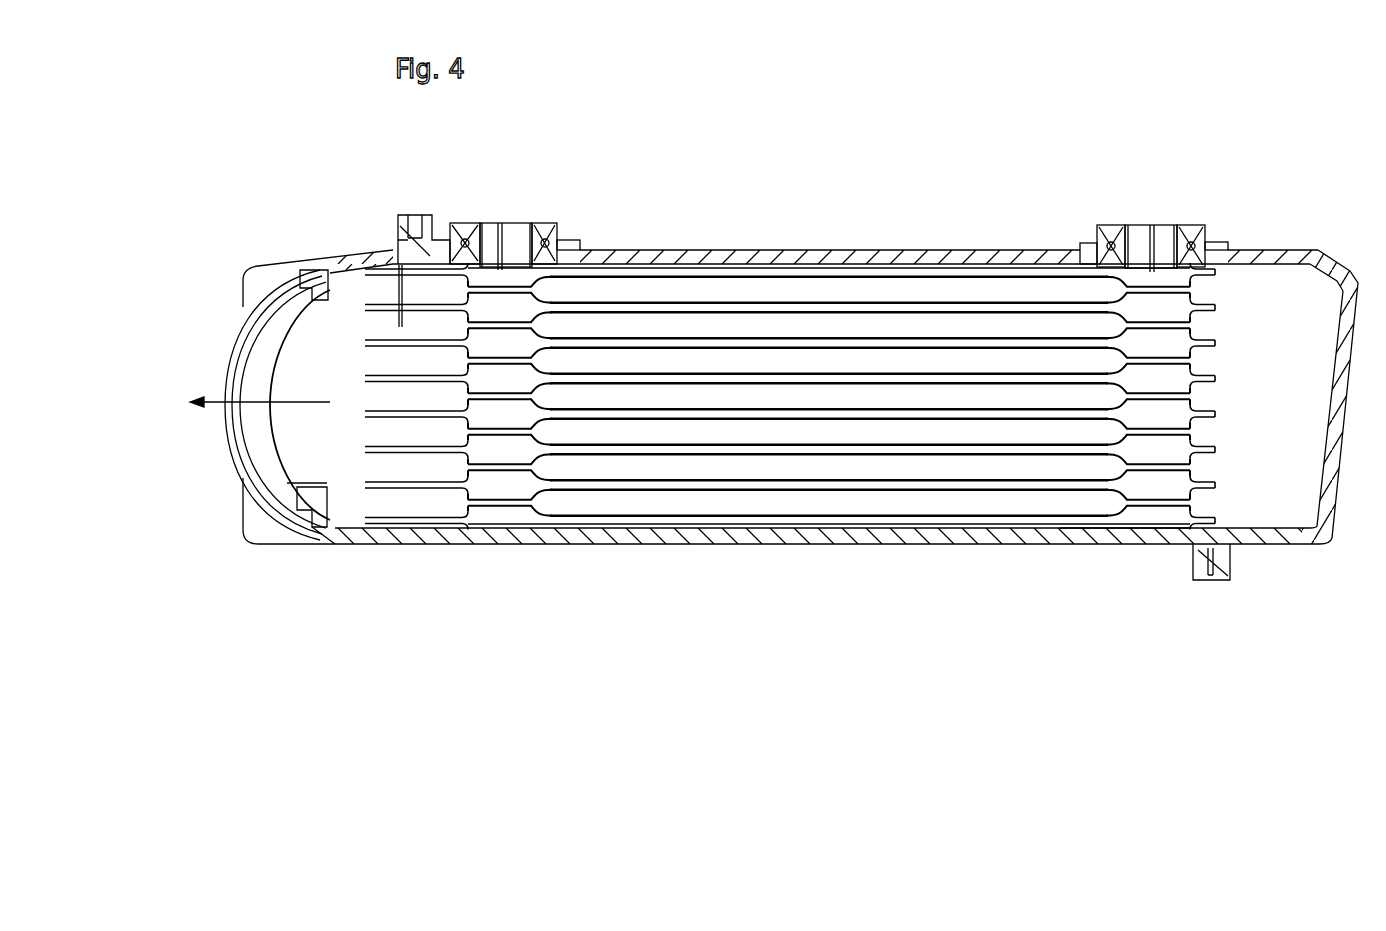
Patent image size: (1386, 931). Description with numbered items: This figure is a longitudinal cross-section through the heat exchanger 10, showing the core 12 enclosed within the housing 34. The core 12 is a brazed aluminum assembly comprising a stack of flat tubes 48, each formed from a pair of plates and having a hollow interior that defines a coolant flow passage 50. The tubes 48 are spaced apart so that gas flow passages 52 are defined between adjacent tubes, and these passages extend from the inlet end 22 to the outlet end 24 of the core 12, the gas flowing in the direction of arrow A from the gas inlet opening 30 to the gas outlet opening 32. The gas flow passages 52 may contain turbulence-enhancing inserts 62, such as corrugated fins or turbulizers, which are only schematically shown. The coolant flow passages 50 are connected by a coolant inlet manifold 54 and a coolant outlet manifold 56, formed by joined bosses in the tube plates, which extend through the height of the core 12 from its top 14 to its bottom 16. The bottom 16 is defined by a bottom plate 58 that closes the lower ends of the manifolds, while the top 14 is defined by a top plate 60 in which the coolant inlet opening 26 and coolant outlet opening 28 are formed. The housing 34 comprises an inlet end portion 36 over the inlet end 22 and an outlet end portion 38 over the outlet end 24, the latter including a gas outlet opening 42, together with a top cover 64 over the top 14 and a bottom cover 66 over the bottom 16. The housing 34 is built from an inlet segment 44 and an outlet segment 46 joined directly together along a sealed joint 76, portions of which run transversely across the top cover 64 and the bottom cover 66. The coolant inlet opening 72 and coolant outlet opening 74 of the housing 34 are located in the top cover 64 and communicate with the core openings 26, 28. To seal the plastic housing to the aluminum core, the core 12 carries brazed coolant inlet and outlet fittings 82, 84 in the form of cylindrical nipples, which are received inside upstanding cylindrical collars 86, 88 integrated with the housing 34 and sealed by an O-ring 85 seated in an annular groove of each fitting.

The heat exchanger 10 is at (645, 247).
The core 12 is at (1205, 487).
The top 14 is at (775, 258).
The bottom 16 is at (900, 532).
The inlet end 22 is at (1197, 360).
The outlet end 24 is at (462, 468).
The coolant inlet opening 26 is at (508, 275).
The coolant outlet opening 28 is at (1155, 275).
The gas inlet opening 30 is at (1262, 443).
The gas outlet opening 32 is at (392, 406).
The housing 34 is at (1122, 540).
The inlet end portion 36 is at (1347, 322).
The outlet end portion 38 is at (332, 257).
The gas outlet opening 42 is at (297, 338).
The inlet segment 44 is at (1342, 266).
The outlet segment 46 is at (780, 540).
The flat tubes 48 is at (866, 415).
The coolant flow passage 50 is at (600, 440).
The gas flow passages 52 is at (694, 299).
The coolant inlet manifold 54 is at (497, 465).
The coolant outlet manifold 56 is at (1165, 455).
The bottom plate 58 is at (845, 532).
The top plate 60 is at (940, 258).
The turbulence-enhancing inserts 62 is at (829, 396).
The top cover 64 is at (730, 254).
The bottom cover 66 is at (960, 540).
The coolant inlet opening 72 is at (518, 233).
The coolant outlet opening 74 is at (1165, 236).
The sealed joint 76 is at (415, 216).
The coolant inlet fitting 82 is at (480, 225).
The coolant outlet fitting 84 is at (1120, 225).
The O-ring 85 is at (462, 228).
The collar 86 is at (558, 232).
The collar 88 is at (1205, 232).